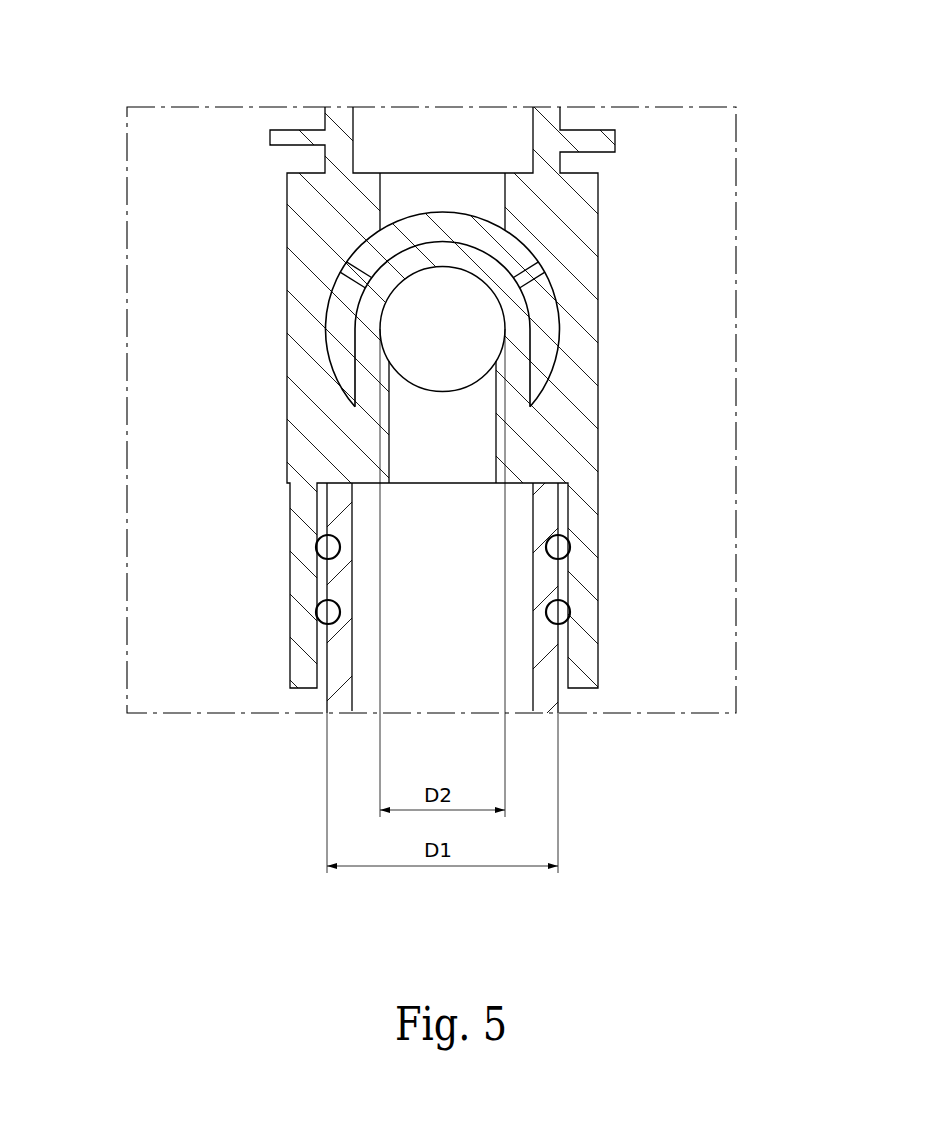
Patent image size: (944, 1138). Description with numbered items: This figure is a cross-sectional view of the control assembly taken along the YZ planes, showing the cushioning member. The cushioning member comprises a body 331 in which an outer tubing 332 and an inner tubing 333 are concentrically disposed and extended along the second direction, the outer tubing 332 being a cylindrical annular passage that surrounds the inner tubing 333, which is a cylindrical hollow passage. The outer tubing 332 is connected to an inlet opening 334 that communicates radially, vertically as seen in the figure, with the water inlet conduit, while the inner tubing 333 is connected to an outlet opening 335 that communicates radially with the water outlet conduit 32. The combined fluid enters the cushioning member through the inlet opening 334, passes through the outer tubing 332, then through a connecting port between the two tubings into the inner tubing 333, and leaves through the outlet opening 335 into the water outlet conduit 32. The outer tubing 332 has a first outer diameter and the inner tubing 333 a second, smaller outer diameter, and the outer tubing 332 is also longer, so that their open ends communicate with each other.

The water outlet conduit 32 is at (548, 693).
The body 331 is at (317, 240).
The outer tubing 332 is at (542, 338).
The inner tubing 333 is at (407, 342).
The inlet opening 334 is at (440, 157).
The outlet opening 335 is at (448, 436).